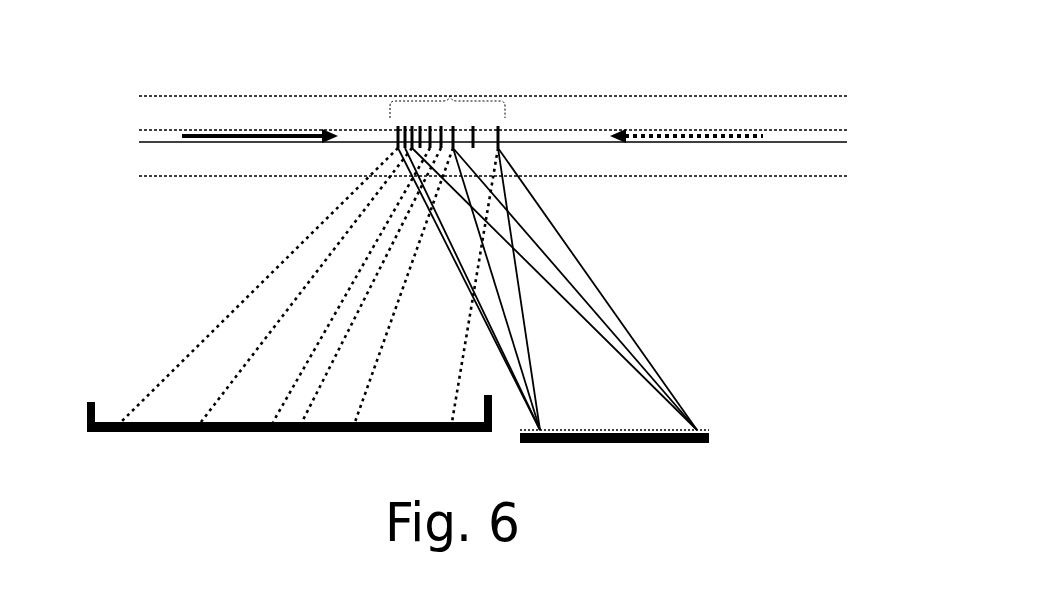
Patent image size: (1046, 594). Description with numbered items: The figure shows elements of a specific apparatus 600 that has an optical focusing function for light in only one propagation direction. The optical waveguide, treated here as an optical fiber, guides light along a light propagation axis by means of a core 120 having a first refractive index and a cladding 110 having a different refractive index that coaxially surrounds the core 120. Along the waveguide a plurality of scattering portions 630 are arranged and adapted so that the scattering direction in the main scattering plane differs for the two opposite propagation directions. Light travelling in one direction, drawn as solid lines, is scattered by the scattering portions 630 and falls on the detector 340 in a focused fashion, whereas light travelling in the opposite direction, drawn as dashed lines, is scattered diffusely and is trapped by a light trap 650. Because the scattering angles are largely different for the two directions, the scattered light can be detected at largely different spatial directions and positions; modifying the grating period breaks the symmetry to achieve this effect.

The apparatus 600 is at (152, 281).
The cladding 110 is at (773, 96).
The core 120 is at (815, 130).
The scattering portions 630 is at (450, 96).
The light trap 650 is at (303, 433).
The detector 340 is at (650, 444).